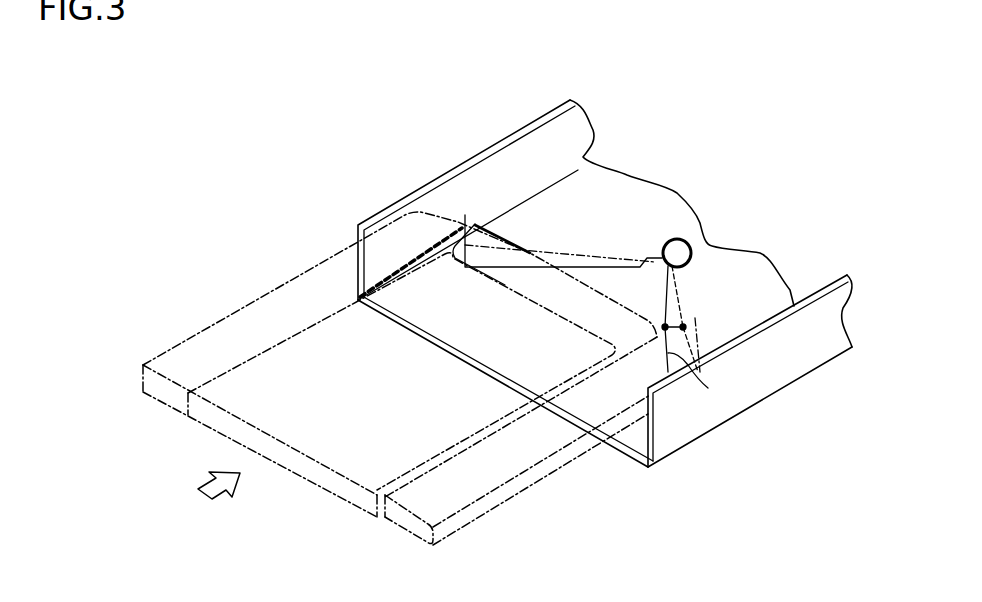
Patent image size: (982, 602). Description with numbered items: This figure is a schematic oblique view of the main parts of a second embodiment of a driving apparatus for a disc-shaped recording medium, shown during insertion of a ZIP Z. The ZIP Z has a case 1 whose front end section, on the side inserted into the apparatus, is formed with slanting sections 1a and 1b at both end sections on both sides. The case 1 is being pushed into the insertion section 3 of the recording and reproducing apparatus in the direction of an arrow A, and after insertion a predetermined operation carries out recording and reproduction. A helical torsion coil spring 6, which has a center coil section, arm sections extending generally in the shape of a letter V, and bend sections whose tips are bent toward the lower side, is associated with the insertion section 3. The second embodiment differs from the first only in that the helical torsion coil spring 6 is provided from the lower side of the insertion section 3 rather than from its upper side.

The case 1 is at (273, 300).
The slanting section 1a is at (670, 350).
The slanting section 1b is at (452, 220).
The insertion section 3 is at (790, 273).
The helical torsion coil spring 6 is at (690, 237).
The ZIP Z is at (503, 505).
The arrow indicating ZIP insertion direction A is at (200, 499).